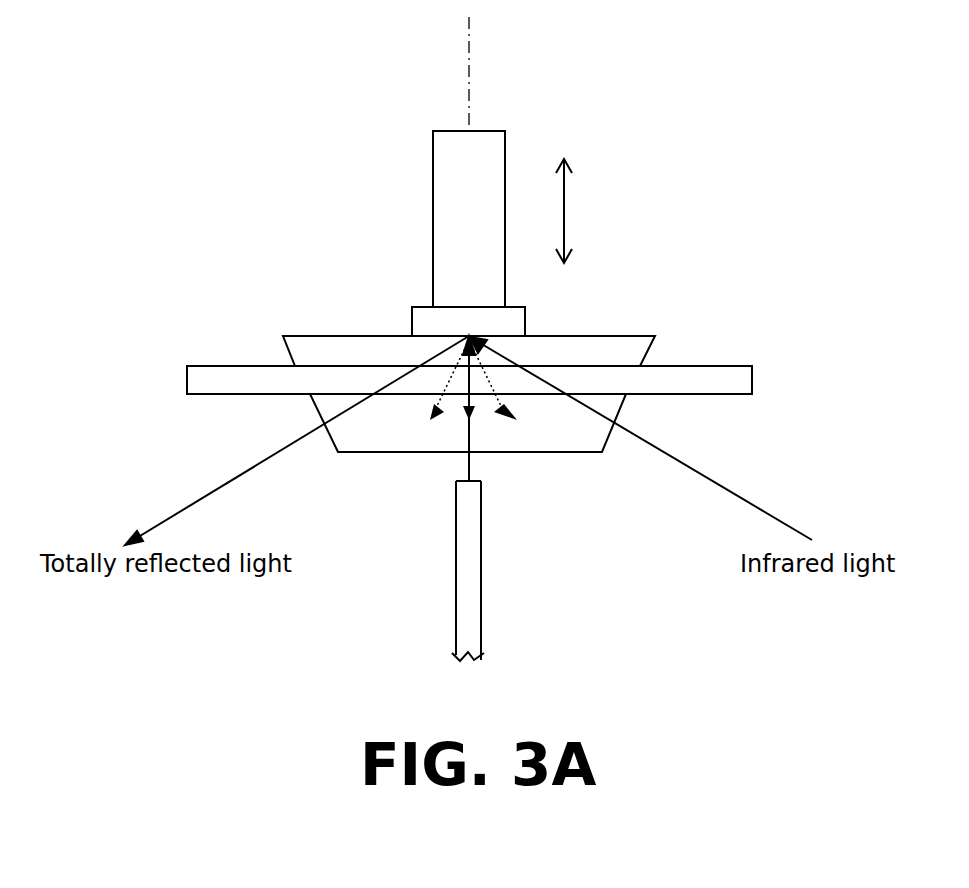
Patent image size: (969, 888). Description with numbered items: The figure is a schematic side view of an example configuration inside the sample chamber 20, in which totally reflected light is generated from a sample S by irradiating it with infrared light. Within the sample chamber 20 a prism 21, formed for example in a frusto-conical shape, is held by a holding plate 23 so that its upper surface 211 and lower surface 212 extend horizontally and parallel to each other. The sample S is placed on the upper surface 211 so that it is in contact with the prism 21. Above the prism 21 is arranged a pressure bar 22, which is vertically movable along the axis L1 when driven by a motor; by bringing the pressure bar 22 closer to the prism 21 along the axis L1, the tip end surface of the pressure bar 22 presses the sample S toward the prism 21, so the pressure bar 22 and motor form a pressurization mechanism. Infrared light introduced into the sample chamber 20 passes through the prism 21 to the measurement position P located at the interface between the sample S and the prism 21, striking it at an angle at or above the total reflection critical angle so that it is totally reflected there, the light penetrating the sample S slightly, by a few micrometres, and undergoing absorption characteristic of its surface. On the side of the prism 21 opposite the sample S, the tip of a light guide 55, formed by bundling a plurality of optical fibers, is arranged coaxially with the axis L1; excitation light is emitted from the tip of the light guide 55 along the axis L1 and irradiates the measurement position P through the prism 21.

The sample chamber 20 is at (250, 114).
The prism 21 is at (516, 400).
The upper surface 211 is at (313, 336).
The lower surface 212 is at (373, 452).
The pressure bar 22 is at (505, 131).
The holding plate 23 is at (752, 377).
The light guide 55 is at (481, 608).
The sample S is at (527, 320).
The measurement position P is at (469, 336).
The axis L1 is at (469, 57).